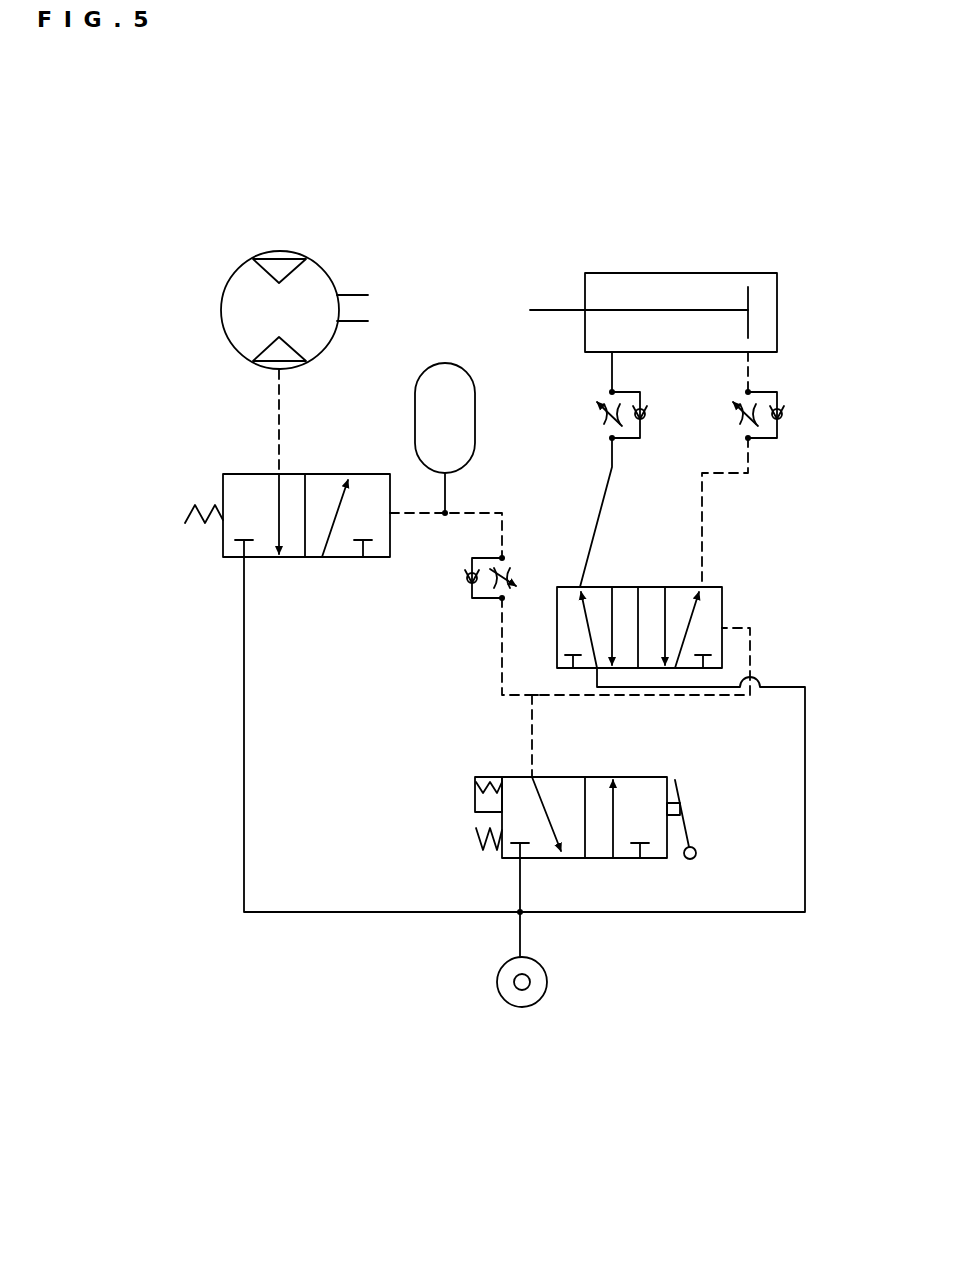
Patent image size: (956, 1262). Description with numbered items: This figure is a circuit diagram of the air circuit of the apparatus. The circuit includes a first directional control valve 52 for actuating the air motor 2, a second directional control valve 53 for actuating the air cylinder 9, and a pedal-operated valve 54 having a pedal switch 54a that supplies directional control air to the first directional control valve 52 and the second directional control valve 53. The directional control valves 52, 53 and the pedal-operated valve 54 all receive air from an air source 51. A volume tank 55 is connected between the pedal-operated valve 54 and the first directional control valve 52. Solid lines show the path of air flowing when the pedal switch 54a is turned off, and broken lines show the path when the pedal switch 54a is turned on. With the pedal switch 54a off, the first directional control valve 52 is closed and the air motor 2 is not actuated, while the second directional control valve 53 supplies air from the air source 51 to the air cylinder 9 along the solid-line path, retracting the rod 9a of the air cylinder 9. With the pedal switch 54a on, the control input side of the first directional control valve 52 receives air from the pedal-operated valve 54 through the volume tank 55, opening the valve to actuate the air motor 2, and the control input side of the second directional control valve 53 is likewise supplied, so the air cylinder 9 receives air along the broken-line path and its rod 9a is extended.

The air motor 2 is at (237, 292).
The air cylinder 9 is at (620, 278).
The rod 9a is at (555, 310).
The air source 51 is at (522, 1007).
The first directional control valve 52 is at (230, 473).
The second directional control valve 53 is at (710, 587).
The pedal-operated valve 54 is at (603, 858).
The pedal switch 54a is at (694, 840).
The volume tank 55 is at (438, 370).